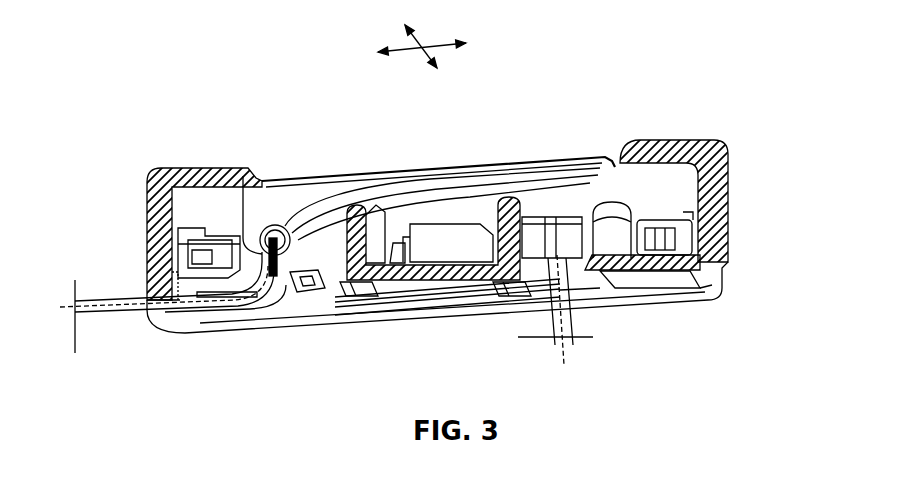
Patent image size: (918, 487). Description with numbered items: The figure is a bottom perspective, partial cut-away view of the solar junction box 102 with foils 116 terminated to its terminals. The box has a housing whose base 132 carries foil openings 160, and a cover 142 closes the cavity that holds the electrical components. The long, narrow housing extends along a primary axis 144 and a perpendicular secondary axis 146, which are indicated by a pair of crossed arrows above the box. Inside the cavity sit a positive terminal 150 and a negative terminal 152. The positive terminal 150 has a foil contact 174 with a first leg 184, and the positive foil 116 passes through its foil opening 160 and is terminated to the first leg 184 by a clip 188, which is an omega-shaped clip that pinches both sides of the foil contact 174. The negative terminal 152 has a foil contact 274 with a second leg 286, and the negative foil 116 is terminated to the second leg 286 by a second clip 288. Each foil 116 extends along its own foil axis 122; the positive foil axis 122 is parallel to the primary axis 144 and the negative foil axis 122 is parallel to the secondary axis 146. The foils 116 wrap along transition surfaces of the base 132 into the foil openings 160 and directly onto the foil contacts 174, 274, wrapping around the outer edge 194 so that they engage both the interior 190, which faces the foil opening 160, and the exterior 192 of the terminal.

The solar junction box 102 is at (614, 86).
The foil 116 is at (135, 312).
The foil axis 122 is at (100, 303).
The base 132 is at (632, 262).
The cover 142 is at (660, 147).
The primary axis 144 is at (445, 40).
The secondary axis 146 is at (432, 18).
The positive terminal 150 is at (222, 170).
The negative terminal 152 is at (660, 222).
The foil opening 160 is at (320, 300).
The foil contact 174 is at (345, 178).
The first leg 184 is at (360, 180).
The clip 188 is at (377, 180).
The interior 190 is at (288, 228).
The exterior 192 is at (262, 225).
The outer edge 194 is at (278, 230).
The foil contact 274 is at (533, 218).
The second leg 286 is at (575, 217).
The clip 288 is at (540, 217).